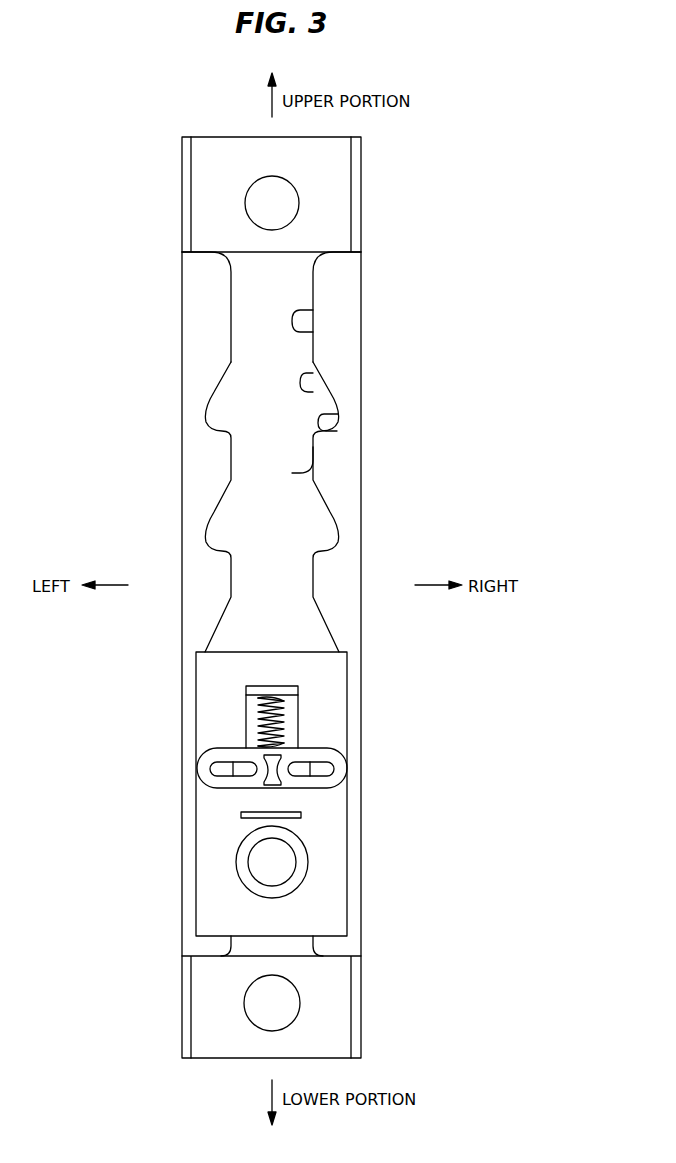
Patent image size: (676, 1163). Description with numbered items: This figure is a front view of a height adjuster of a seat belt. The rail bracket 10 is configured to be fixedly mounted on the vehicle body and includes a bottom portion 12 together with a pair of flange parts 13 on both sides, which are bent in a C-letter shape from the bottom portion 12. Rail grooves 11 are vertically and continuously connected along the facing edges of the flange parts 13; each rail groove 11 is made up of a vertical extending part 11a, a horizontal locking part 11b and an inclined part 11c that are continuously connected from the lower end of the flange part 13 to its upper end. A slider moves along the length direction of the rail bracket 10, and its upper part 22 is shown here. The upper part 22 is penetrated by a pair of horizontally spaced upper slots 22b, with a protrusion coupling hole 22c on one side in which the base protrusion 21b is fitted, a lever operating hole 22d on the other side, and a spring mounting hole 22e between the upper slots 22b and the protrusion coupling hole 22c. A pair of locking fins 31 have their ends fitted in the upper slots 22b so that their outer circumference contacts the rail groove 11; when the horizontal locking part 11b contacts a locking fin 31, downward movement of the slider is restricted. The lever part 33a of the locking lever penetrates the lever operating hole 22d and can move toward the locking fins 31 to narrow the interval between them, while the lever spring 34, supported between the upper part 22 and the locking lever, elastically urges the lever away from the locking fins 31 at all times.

The rail bracket 10 is at (172, 230).
The rail groove 11 is at (465, 323).
The vertical extending part 11a is at (313, 308).
The horizontal locking part 11b is at (338, 414).
The inclined part 11c is at (313, 368).
The bottom portion 12 is at (210, 171).
The flange part 13 is at (193, 288).
The base protrusion 21b is at (300, 862).
The upper part 22 is at (325, 905).
The upper slot 22b is at (255, 776).
The protrusion coupling hole 22c is at (240, 868).
The lever operating hole 22d is at (250, 728).
The spring mounting hole 22e is at (303, 815).
The locking fin 31 is at (220, 768).
The lever part 33a is at (300, 690).
The lever spring 34 is at (300, 722).